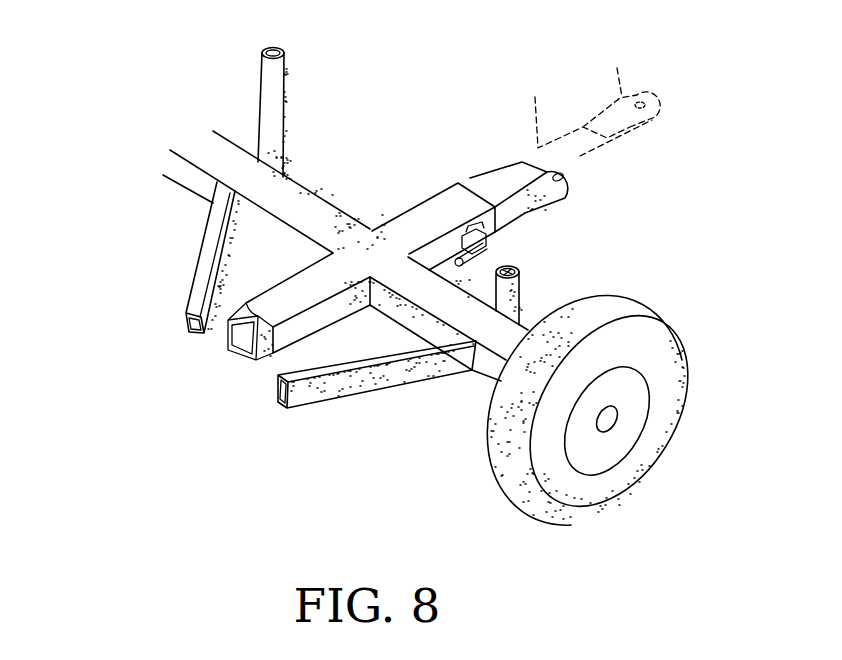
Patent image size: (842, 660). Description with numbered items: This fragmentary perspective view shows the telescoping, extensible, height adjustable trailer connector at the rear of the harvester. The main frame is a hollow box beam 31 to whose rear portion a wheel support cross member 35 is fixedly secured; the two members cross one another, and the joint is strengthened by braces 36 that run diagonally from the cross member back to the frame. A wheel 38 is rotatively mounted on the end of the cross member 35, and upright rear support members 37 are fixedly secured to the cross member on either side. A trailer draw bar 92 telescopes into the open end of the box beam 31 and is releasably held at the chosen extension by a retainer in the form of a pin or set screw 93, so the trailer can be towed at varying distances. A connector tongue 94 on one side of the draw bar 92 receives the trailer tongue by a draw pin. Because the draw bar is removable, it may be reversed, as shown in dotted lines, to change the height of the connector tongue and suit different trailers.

The box beam main frame 31 is at (418, 212).
The wheel support cross member 35 is at (311, 202).
The braces 36 is at (207, 259).
The upright rear support members 37 is at (278, 105).
The wheel 38 is at (676, 448).
The trailer draw bar 92 is at (510, 176).
The pin or set screw retainer 93 is at (490, 250).
The connector tongue 94 is at (557, 168).